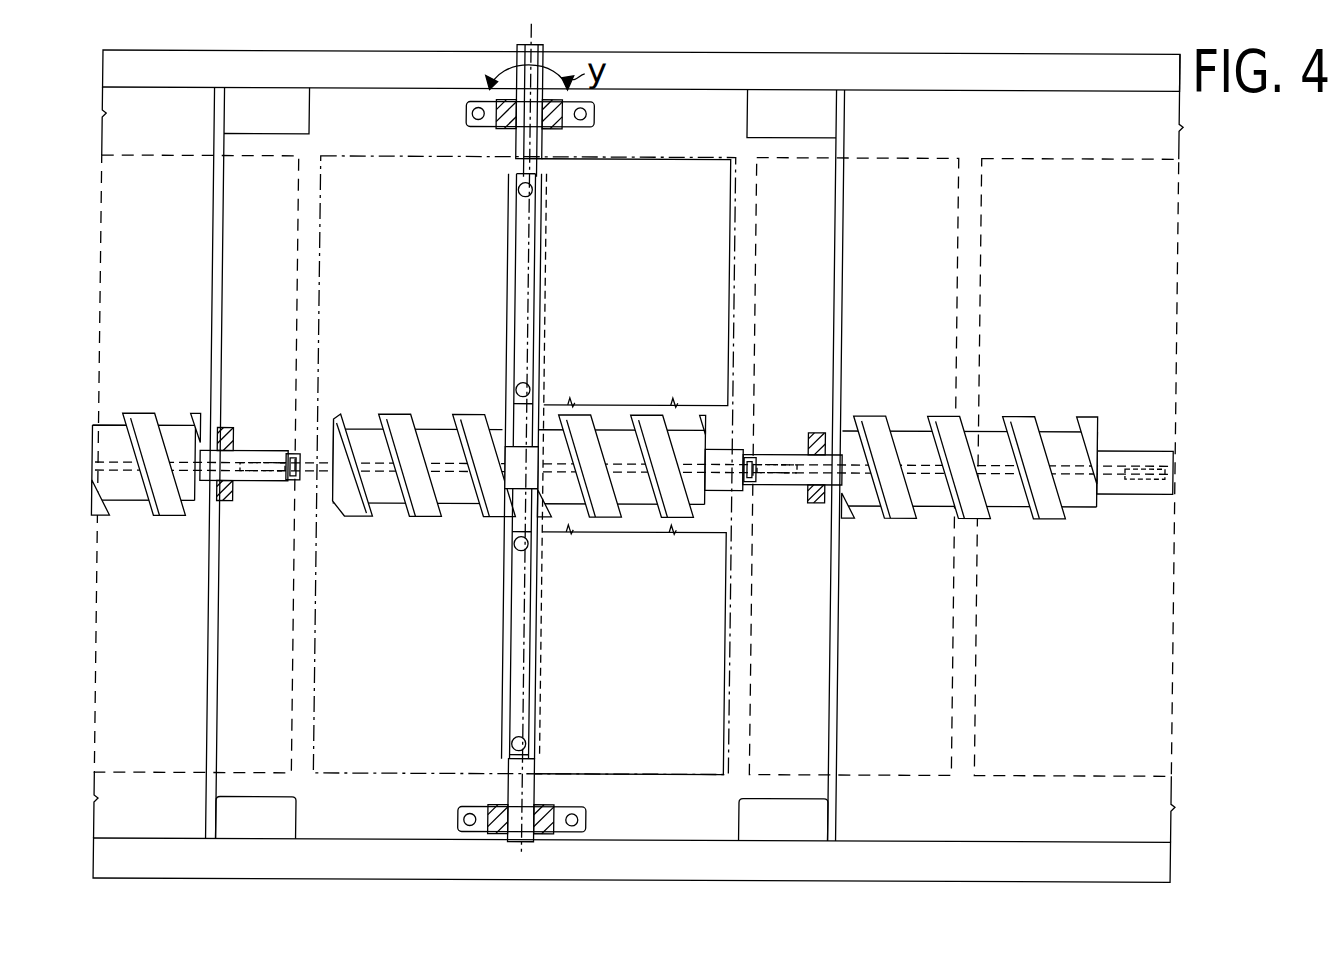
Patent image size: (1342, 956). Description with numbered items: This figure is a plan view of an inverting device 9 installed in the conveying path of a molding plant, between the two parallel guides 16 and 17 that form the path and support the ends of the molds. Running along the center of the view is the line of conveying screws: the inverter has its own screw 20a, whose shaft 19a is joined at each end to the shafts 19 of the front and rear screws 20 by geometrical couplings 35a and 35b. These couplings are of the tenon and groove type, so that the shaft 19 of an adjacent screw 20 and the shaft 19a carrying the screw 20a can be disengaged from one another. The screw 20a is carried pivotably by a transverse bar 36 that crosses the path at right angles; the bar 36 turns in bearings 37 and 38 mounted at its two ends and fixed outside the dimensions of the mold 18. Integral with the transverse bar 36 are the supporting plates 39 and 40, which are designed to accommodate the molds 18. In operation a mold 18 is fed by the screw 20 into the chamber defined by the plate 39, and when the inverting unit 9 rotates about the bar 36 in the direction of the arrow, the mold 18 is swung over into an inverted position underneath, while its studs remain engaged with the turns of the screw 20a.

The inverting device 9 is at (639, 190).
The guide 16 is at (404, 152).
The guide 17 is at (397, 830).
The mold 18 is at (1076, 468).
The shaft 19 is at (242, 447).
The shaft 19a is at (753, 455).
The screw 20 is at (152, 422).
The screw 20a is at (440, 440).
The geometrical coupling 35a is at (301, 479).
The geometrical coupling 35b is at (766, 473).
The transverse bar 36 is at (533, 582).
The bearing 37 is at (556, 826).
The bearing 38 is at (498, 118).
The supporting plate 39 is at (714, 178).
The supporting plate 40 is at (456, 737).